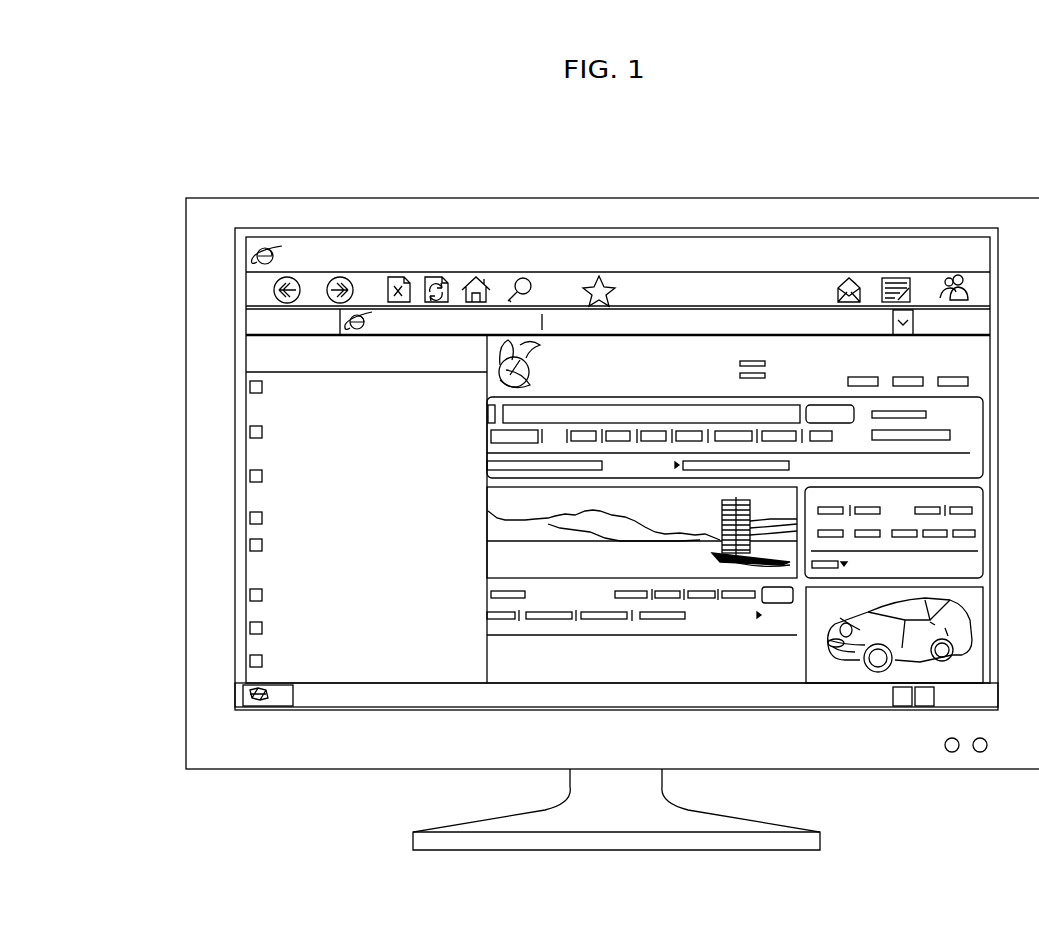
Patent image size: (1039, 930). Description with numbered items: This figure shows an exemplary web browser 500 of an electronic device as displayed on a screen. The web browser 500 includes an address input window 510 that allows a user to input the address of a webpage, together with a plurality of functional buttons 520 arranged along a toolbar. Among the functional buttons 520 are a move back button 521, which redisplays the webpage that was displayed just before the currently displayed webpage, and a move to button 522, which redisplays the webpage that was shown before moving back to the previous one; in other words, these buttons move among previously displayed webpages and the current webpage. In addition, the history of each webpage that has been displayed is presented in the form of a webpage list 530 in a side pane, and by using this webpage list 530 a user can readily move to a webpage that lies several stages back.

The web browser 500 is at (862, 237).
The address input window 510 is at (727, 322).
The functional buttons 520 is at (693, 287).
The move back button 521 is at (287, 278).
The move to button 522 is at (340, 278).
The webpage list 530 is at (260, 408).